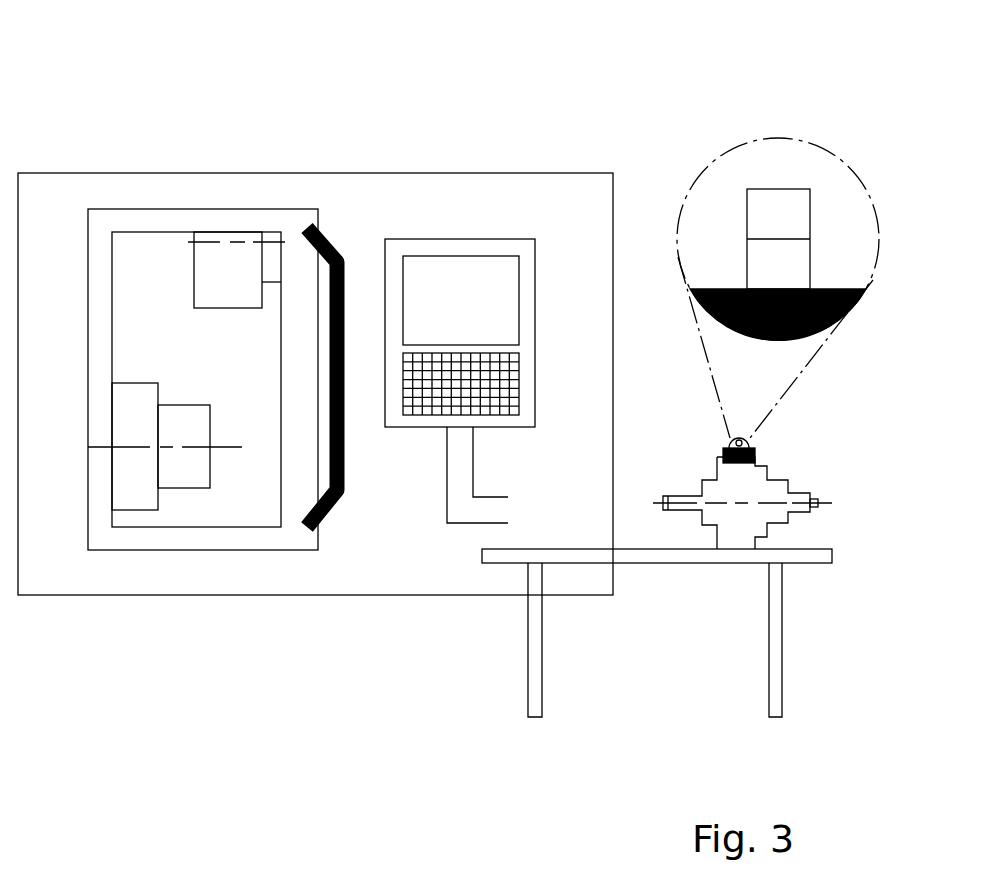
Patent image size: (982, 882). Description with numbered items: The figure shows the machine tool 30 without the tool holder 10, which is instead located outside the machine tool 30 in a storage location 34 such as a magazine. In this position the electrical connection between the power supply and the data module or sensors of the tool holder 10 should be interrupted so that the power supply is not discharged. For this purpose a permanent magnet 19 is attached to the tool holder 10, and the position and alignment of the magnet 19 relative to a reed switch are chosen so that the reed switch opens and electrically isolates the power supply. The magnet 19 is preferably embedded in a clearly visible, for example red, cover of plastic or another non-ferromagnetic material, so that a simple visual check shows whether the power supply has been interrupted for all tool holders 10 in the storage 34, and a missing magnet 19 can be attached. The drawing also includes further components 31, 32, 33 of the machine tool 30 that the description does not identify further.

The tool holder 10 is at (802, 480).
The magnet 19 is at (747, 214).
The machine tool 30 is at (515, 173).
The control unit 31 is at (148, 265).
The module 32 is at (233, 270).
The drive unit 33 is at (187, 472).
The storage location 34 is at (664, 626).